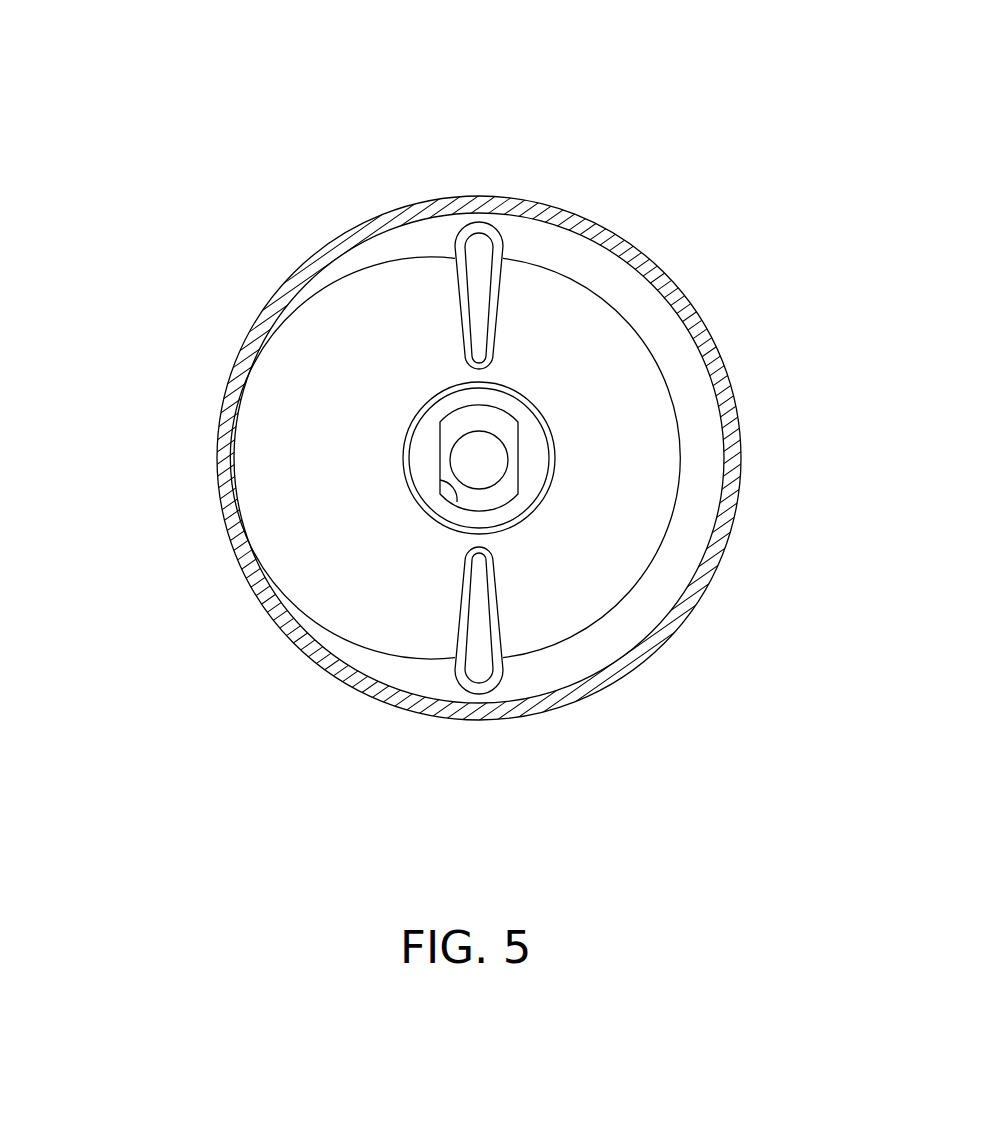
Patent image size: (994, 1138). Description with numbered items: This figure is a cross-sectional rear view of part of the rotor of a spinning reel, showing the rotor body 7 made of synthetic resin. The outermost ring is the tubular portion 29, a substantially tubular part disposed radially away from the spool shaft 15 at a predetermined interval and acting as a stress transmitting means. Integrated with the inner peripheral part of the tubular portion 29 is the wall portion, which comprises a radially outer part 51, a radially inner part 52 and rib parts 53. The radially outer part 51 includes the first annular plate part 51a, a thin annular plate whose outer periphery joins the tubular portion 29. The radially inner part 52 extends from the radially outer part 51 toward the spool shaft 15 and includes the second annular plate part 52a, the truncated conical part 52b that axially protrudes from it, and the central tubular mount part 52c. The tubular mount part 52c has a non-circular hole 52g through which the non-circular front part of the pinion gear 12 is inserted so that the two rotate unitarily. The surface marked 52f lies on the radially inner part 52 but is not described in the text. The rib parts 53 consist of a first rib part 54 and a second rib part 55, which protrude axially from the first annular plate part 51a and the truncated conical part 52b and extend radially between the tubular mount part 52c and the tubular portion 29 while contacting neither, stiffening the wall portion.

The rotor body 7 is at (712, 140).
The pinion gear 12 is at (502, 490).
The spool shaft 15 is at (488, 452).
The tubular portion 29 is at (593, 708).
The radially outer part 51 is at (320, 305).
The first annular plate part 51a is at (479, 458).
The radially inner part 52 is at (92, 408).
The second annular plate part 52a is at (323, 423).
The truncated conical part 52b is at (323, 470).
The tubular mount part 52c is at (425, 467).
The flat surface 52f is at (388, 385).
The non-circular hole 52g is at (440, 522).
The rib parts 53 is at (481, 472).
The first rib part 54 is at (478, 308).
The second rib part 55 is at (478, 637).